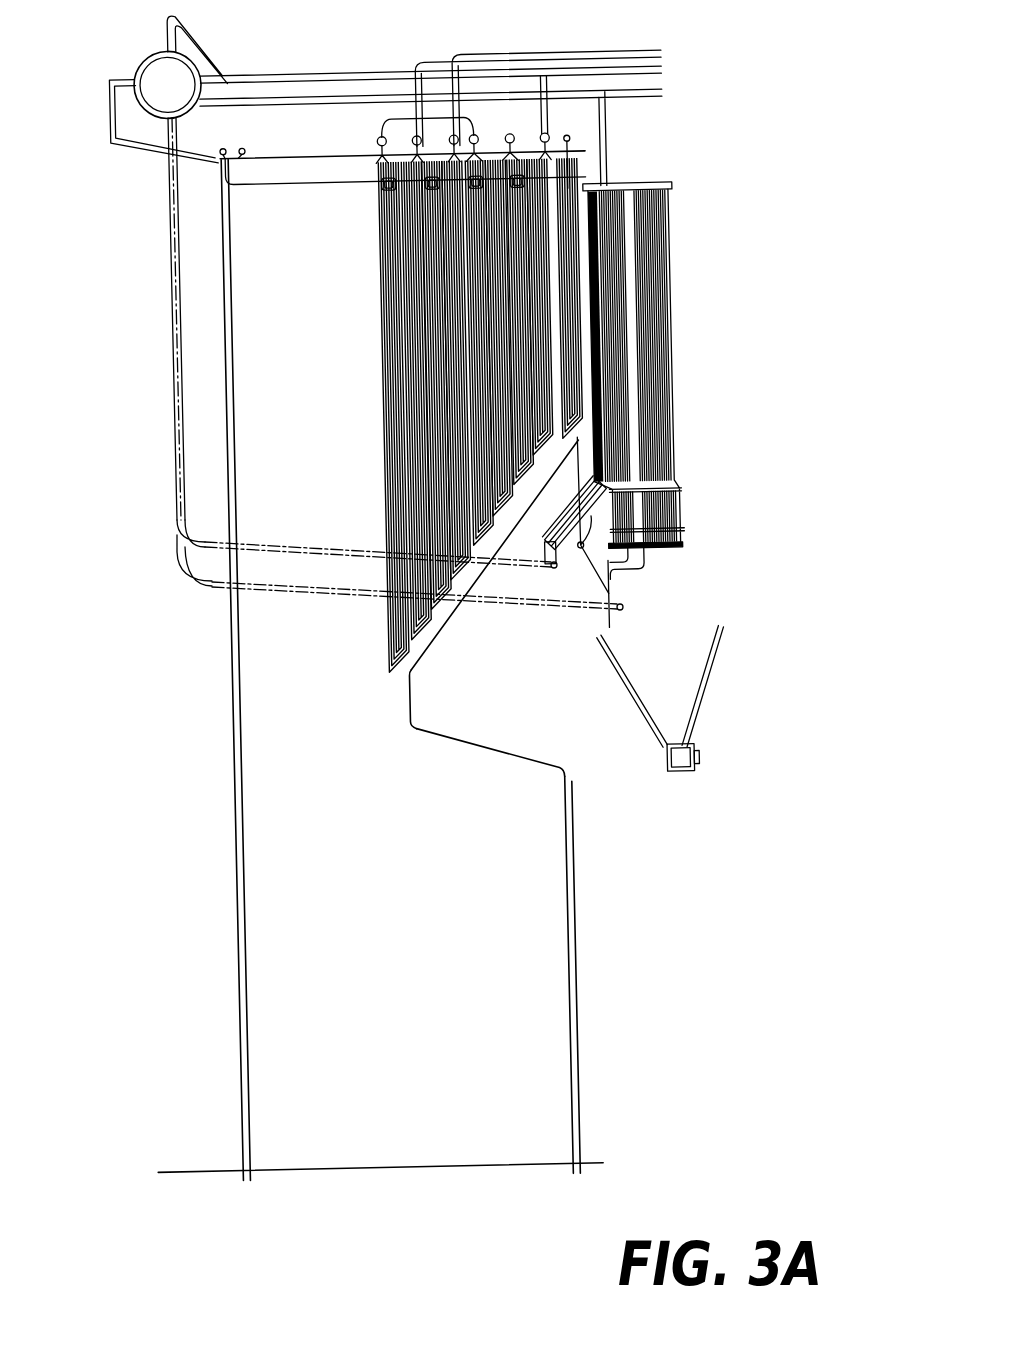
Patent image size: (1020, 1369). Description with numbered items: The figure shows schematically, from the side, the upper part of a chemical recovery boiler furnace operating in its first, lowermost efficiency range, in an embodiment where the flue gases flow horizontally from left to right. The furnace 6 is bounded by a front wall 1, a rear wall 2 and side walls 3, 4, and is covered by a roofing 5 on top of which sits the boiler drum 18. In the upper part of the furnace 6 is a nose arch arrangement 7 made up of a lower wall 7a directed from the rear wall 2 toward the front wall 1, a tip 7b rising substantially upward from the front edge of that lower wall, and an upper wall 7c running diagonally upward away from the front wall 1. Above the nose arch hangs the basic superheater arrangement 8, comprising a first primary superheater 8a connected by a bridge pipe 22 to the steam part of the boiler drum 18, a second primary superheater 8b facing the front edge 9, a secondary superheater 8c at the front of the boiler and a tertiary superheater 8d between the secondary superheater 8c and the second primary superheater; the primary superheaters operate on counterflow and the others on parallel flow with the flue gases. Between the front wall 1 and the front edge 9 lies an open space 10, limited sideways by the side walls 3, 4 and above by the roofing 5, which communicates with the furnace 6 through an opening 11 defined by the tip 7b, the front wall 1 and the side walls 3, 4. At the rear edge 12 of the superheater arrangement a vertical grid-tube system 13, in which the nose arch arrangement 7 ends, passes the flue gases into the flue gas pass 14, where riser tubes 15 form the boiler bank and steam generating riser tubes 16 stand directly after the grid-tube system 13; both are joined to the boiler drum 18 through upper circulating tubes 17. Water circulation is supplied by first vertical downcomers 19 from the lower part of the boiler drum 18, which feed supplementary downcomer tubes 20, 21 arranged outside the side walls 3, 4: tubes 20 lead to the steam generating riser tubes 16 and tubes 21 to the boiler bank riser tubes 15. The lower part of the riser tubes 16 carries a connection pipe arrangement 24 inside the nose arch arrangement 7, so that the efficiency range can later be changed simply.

The front wall 1 is at (240, 930).
The rear wall 2 is at (573, 1040).
The side wall 3 is at (432, 1041).
The side wall 4 is at (380, 1090).
The roofing 5 is at (272, 163).
The furnace 6 is at (413, 978).
The nose arch arrangement 7 is at (567, 657).
The lower wall 7a is at (477, 748).
The tip 7b is at (410, 706).
The upper wall 7c is at (457, 612).
The basic superheater arrangement 8 is at (557, 187).
The primary superheater 8a is at (547, 457).
The primary superheater 8b is at (510, 512).
The secondary superheater 8c is at (400, 338).
The tertiary superheater 8d is at (448, 277).
The front edge 9 is at (387, 445).
The open space 10 is at (326, 426).
The opening 11 is at (320, 735).
The rear edge 12 is at (573, 327).
The grid-tube system 13 is at (578, 375).
The flue gas pass 14 is at (679, 369).
The riser tubes 15 is at (663, 460).
The steam generating riser tubes 16 is at (600, 420).
The upper circulating tubes 17 is at (566, 88).
The boiler drum 18 is at (141, 116).
The first vertical downcomers 19 is at (173, 410).
The supplementary downcomer tubes 20 is at (180, 563).
The supplementary downcomer tubes 21 is at (265, 597).
The bridge pipe 22 is at (320, 77).
The connection pipe arrangement 24 is at (574, 516).